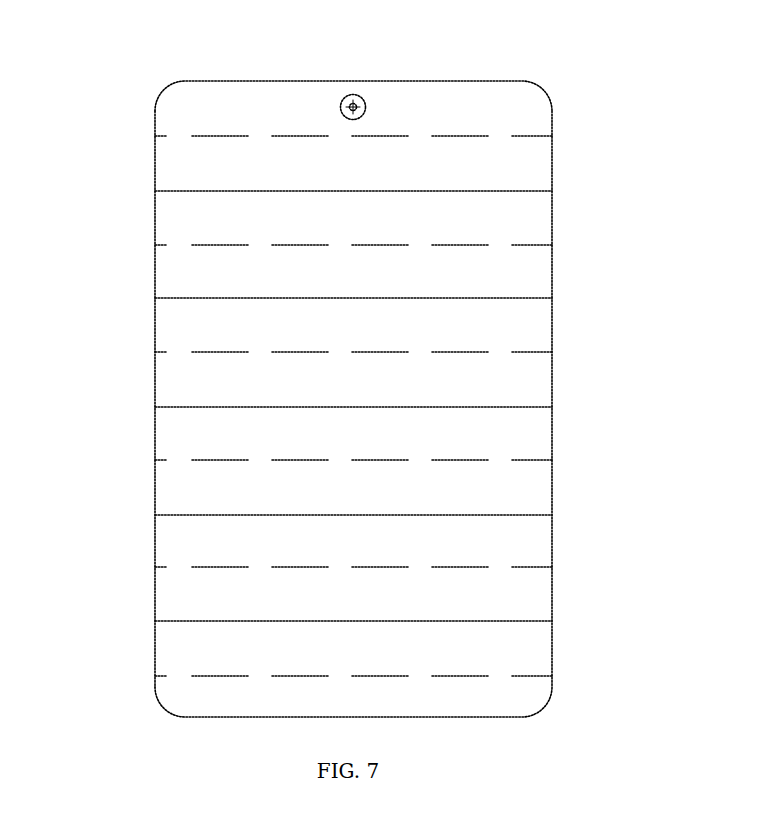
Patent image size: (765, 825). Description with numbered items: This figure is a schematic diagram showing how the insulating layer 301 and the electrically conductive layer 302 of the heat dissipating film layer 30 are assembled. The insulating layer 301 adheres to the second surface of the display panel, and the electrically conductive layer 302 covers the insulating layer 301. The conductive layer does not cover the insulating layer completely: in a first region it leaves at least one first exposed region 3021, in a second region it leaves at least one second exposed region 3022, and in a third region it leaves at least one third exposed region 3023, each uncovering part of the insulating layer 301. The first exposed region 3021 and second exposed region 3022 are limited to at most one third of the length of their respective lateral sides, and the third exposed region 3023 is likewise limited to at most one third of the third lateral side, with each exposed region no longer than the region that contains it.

The heat dissipating film layer 30 is at (371, 372).
The insulating layer 301 is at (552, 581).
The electrically conductive layer 302 is at (552, 643).
The first exposed region 3021 is at (157, 150).
The second exposed region 3022 is at (552, 147).
The third exposed region 3023 is at (217, 82).